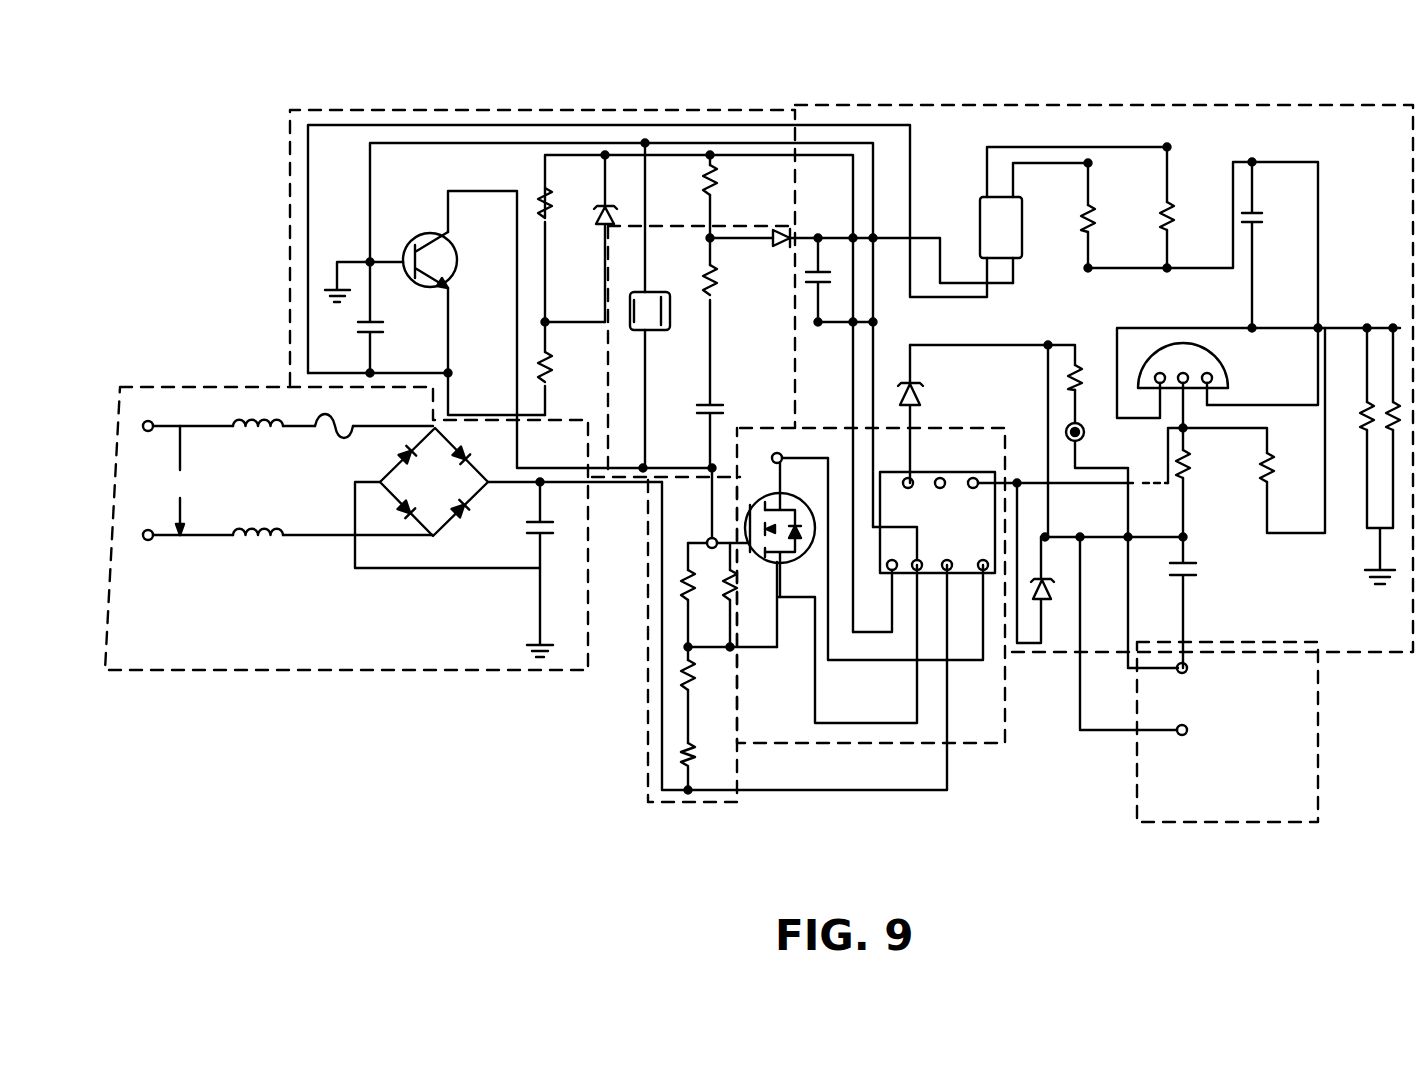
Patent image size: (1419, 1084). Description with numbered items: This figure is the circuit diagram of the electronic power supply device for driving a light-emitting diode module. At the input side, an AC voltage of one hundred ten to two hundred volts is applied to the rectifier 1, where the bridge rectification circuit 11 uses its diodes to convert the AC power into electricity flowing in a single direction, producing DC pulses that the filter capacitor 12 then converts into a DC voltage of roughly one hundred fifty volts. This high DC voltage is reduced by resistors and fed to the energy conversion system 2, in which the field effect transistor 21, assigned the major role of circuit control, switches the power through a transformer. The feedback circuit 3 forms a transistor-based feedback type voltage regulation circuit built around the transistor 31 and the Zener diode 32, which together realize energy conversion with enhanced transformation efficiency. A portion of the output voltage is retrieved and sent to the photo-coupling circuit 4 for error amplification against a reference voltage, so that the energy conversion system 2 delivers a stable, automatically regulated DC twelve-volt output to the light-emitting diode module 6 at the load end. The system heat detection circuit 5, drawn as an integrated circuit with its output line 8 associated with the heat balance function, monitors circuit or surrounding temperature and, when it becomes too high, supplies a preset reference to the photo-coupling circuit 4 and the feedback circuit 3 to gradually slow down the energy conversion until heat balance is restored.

The rectifier 1 is at (172, 386).
The energy conversion system 2 is at (862, 750).
The feedback circuit 3 is at (402, 108).
The photo-coupling circuit 4 is at (1102, 108).
The system heat detection circuit 5 is at (657, 290).
The LED module 6 is at (1227, 732).
The heat balance circuit 8 is at (652, 333).
The bridge rectification circuit 11 is at (425, 540).
The filter capacitor 12 is at (528, 543).
The field effect transistor 21 is at (812, 600).
The transistor 31 is at (425, 235).
The Zener diode 32 is at (597, 207).